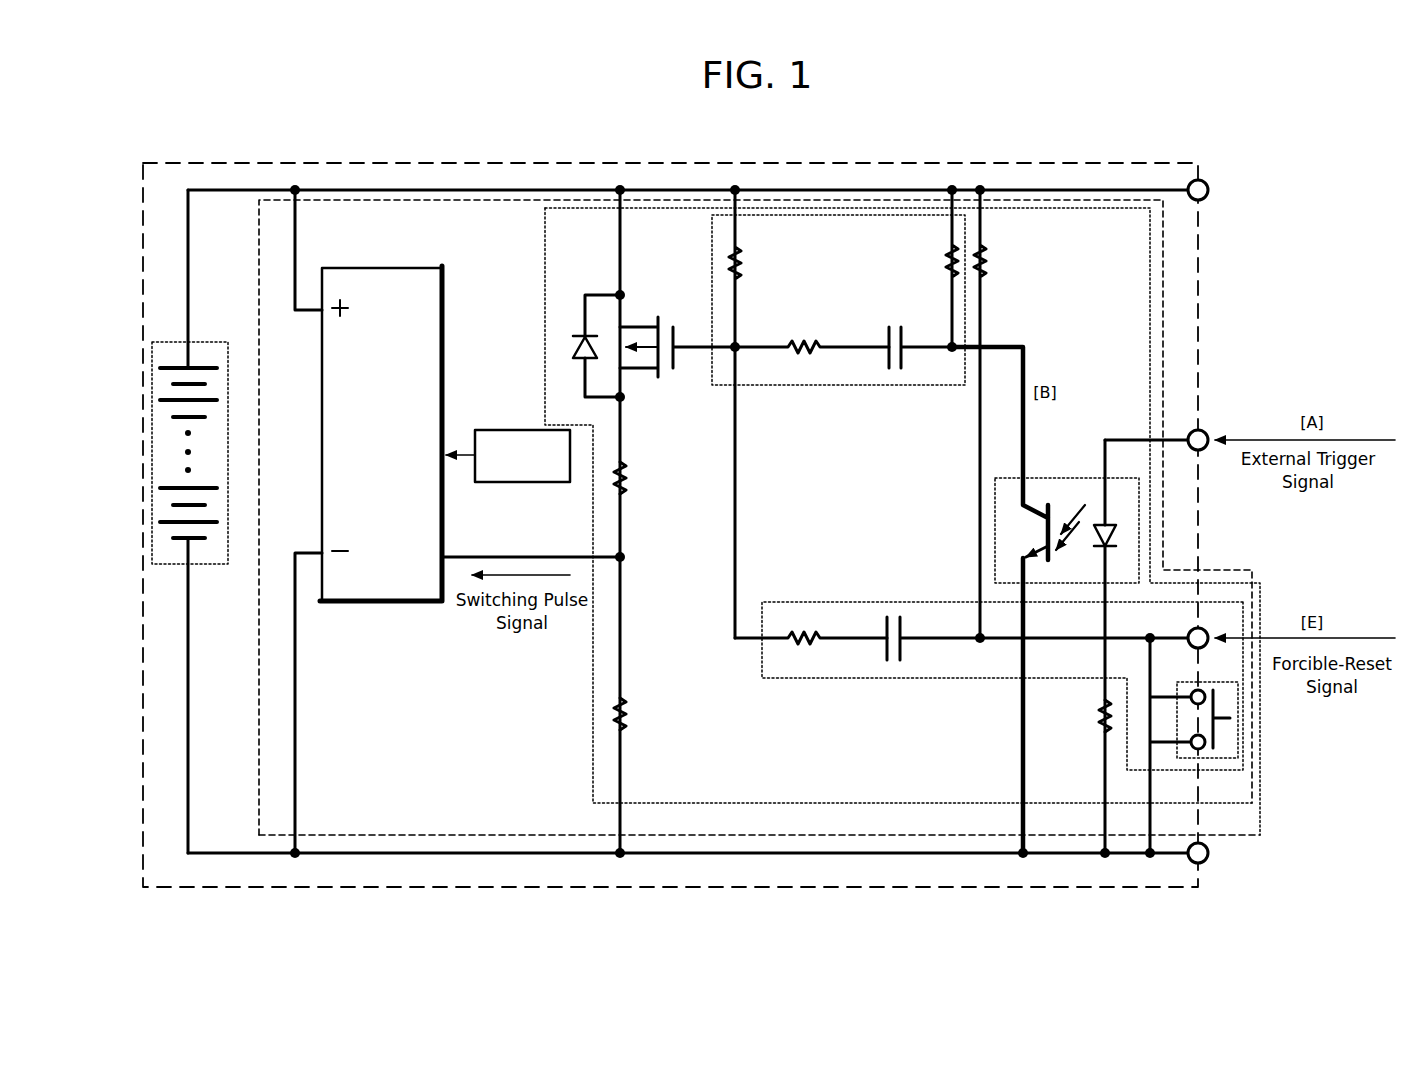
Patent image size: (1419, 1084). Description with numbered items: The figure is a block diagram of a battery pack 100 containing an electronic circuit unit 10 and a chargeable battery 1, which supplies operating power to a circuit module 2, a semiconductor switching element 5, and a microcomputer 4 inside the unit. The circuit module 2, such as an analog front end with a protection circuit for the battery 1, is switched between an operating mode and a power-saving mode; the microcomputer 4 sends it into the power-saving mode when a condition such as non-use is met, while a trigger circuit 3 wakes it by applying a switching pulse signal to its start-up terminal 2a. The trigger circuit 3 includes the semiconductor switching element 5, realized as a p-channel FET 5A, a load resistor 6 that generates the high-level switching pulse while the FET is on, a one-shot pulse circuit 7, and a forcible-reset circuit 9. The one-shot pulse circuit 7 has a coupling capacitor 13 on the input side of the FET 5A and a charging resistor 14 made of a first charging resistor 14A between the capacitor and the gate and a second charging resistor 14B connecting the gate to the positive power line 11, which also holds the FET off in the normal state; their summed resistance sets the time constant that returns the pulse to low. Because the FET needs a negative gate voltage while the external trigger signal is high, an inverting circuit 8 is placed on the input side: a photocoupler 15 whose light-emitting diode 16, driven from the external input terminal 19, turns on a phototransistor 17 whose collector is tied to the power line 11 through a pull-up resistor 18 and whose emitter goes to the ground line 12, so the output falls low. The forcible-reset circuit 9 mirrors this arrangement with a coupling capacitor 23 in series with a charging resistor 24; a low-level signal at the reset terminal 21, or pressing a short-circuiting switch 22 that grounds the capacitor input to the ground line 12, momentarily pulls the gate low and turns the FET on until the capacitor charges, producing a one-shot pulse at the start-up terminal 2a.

The battery pack 100 is at (432, 161).
The battery 1 is at (203, 366).
The circuit module 2 is at (457, 521).
The start-up terminal 2a is at (447, 553).
The trigger circuit 3 is at (1150, 331).
The microcomputer 4 is at (500, 429).
The semiconductor switching element 5 is at (589, 521).
The p-channel FET 5A is at (578, 284).
The load resistor 6 is at (628, 475).
The one-shot pulse circuit 7 is at (711, 240).
The inverting circuit 8 is at (1018, 600).
The forcible-reset circuit 9 is at (989, 686).
The electronic circuit unit 10 is at (1163, 268).
The power line 11 is at (1085, 190).
The ground line 12 is at (833, 855).
The coupling capacitor 13 is at (888, 362).
The charging resistor 14 is at (833, 414).
The first charging resistor 14A is at (812, 314).
The second charging resistor 14B is at (748, 262).
The photocoupler 15 is at (996, 517).
The light-emitting diode 16 is at (1098, 520).
The phototransistor 17 is at (1014, 529).
The pull-up resistor 18 is at (956, 277).
The external input terminal 19 is at (1210, 434).
The reset terminal 21 is at (1206, 629).
The short-circuiting switch 22 is at (1220, 772).
The coupling capacitor 23 is at (887, 655).
The charging resistor 24 is at (808, 656).